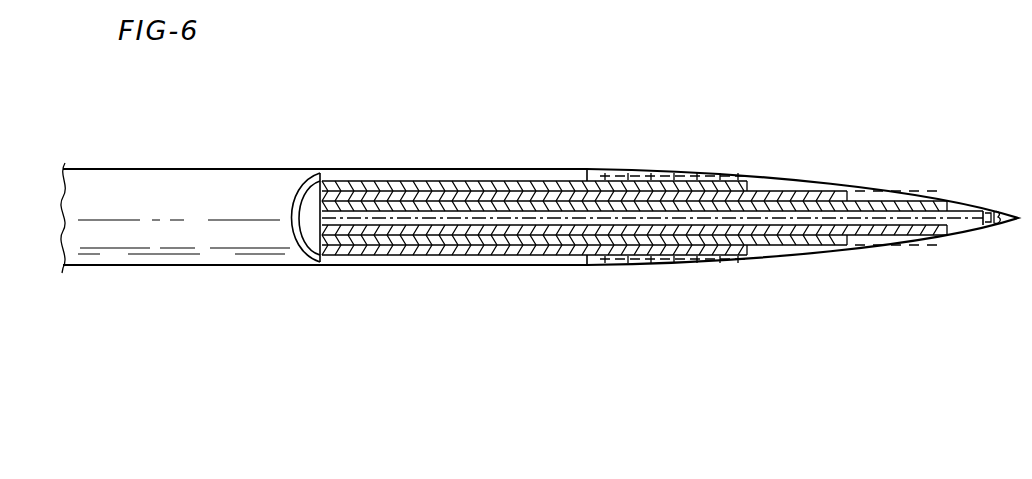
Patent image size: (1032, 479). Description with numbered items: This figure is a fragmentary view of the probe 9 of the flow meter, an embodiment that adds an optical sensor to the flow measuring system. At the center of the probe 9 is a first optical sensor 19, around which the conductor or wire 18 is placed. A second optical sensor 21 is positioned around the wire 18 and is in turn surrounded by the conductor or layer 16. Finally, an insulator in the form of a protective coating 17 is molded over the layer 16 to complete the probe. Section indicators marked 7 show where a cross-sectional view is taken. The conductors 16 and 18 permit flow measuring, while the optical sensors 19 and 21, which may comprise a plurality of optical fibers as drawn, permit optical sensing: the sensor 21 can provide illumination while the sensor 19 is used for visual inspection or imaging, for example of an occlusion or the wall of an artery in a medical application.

The section line 7- 7 is at (120, 388).
The probe 9 is at (336, 142).
The conductor or layer 16 is at (491, 183).
The protective coating 17 is at (573, 170).
The conductor or wire 18 is at (373, 230).
The first optical sensor 19 is at (453, 220).
The second optical sensor 21 is at (397, 205).